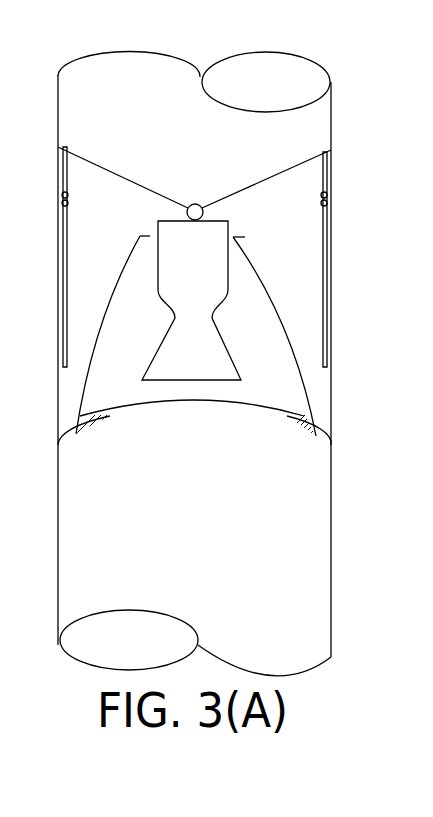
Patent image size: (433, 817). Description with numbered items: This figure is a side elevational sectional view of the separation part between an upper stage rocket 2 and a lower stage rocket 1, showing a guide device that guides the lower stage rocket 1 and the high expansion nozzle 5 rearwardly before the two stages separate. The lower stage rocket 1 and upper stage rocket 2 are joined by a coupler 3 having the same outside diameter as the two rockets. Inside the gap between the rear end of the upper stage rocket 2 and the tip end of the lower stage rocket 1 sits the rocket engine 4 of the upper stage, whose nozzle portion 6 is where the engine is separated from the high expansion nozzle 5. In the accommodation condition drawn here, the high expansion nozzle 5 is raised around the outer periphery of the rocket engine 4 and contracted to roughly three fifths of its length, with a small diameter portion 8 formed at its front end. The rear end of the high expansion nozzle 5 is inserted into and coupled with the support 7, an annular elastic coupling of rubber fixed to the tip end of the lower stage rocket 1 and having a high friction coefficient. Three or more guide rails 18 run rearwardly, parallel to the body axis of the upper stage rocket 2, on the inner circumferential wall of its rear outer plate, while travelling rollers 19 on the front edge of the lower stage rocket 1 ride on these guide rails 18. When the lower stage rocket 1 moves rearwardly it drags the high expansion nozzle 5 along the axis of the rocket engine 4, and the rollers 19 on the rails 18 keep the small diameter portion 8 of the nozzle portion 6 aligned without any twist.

The lower stage rocket 1 is at (68, 544).
The upper stage rocket 2 is at (296, 72).
The coupler 3 is at (60, 183).
The rocket engine 4 is at (224, 229).
The high expansion nozzle 5 is at (277, 302).
The nozzle portion 6 is at (231, 354).
The support 7 is at (78, 419).
The small diameter portion 8 is at (236, 237).
The guide rails 18 is at (60, 297).
The travelling rollers 19 is at (68, 200).